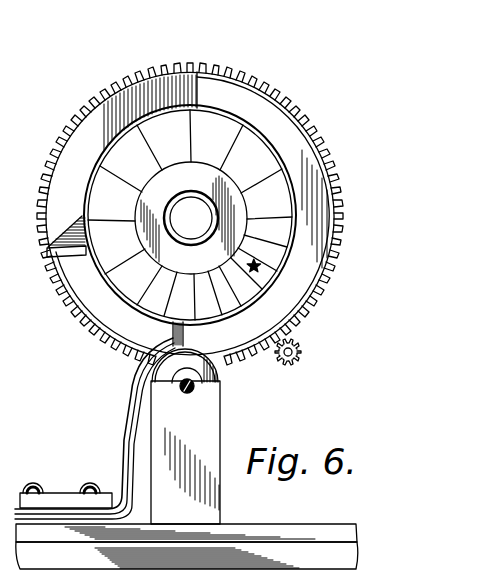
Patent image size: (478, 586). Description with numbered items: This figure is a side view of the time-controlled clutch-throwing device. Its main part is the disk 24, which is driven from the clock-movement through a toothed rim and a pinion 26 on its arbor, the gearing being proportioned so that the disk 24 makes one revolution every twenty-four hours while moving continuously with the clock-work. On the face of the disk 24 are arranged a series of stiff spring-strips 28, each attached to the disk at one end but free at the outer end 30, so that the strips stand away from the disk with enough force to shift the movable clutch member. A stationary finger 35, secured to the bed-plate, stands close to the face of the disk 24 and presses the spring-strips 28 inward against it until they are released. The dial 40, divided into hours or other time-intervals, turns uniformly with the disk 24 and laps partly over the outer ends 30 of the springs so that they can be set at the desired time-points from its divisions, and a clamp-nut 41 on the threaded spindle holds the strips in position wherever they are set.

The disk 24 is at (300, 284).
The pinion 26 is at (302, 352).
The spring-strips 28 is at (101, 307).
The outer end of spring-strip 30 is at (72, 255).
The stationary finger 35 is at (122, 438).
The dial 40 is at (243, 193).
The clamp-nut 41 is at (188, 197).